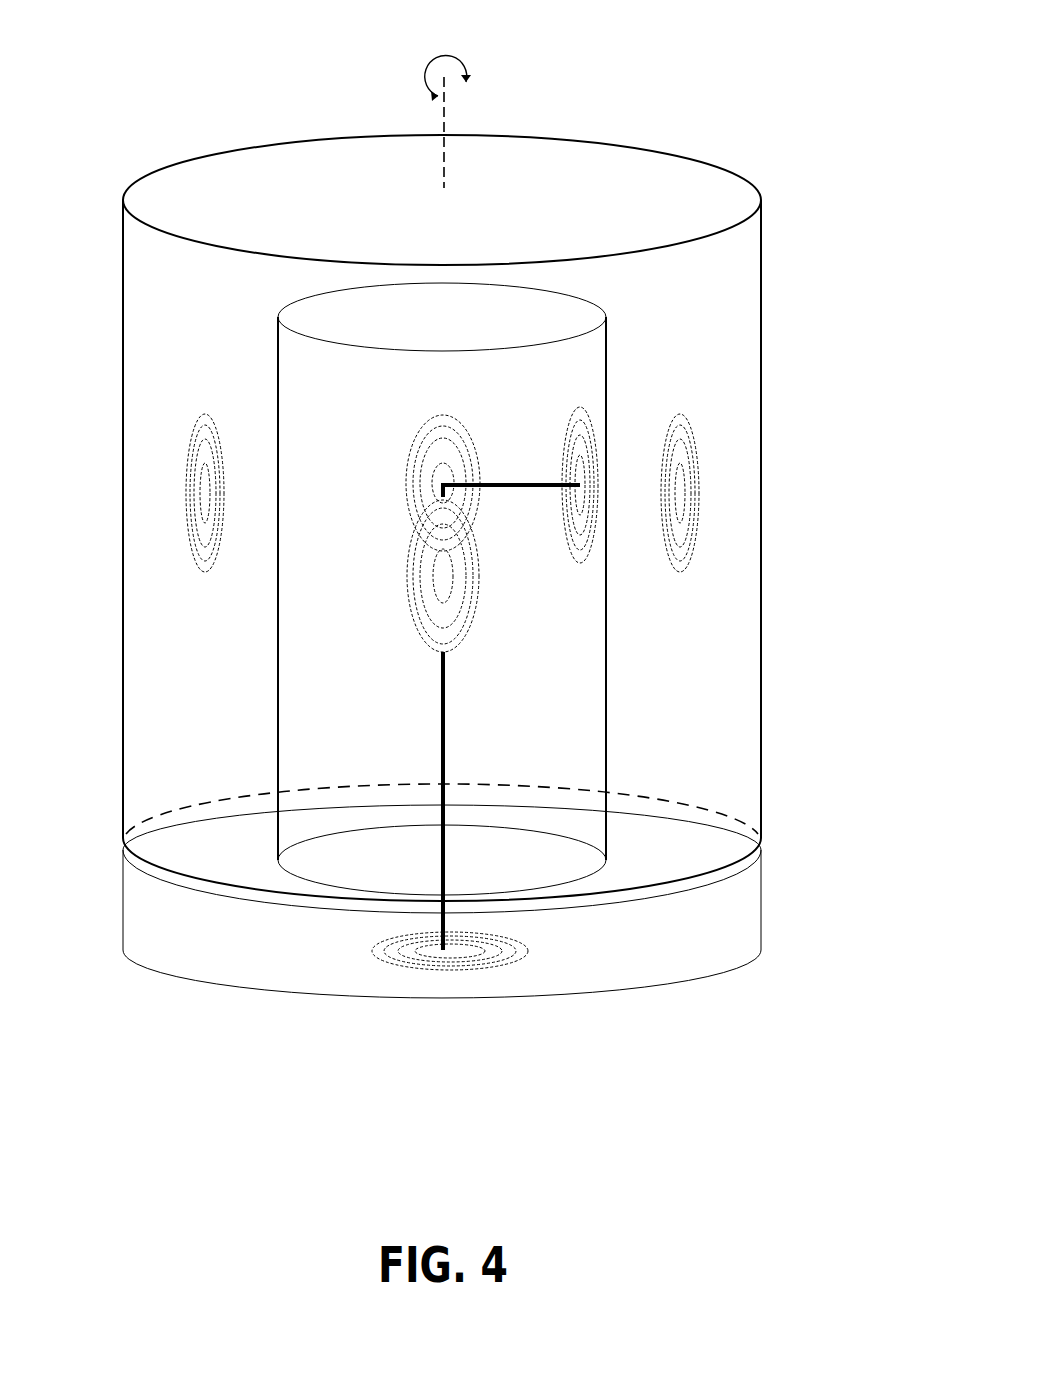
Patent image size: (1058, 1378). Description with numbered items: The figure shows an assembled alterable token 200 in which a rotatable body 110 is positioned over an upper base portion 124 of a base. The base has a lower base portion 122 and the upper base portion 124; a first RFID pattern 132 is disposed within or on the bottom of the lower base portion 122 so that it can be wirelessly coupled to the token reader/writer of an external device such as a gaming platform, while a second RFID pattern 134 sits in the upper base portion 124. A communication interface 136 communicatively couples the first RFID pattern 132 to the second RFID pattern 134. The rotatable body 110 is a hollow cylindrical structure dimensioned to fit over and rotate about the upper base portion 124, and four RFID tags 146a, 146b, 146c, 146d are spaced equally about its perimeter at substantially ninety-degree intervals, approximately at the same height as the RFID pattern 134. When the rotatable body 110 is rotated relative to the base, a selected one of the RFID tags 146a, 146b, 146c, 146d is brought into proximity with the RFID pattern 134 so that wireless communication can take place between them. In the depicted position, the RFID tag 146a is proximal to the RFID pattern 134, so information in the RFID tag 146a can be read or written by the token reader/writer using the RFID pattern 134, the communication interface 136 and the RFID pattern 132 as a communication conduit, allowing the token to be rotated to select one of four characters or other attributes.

The system 200 is at (719, 41).
The rotatable body 110 is at (763, 725).
The lower base portion 122 is at (763, 898).
The upper base portion 124 is at (608, 723).
The first RFID pattern 132 is at (528, 955).
The second RFID pattern 134 is at (588, 420).
The communication interface 136 is at (447, 700).
The RFID tag 146a is at (697, 512).
The RFID tag 146b is at (440, 452).
The RFID tag 146c is at (188, 453).
The RFID tag 146d is at (479, 593).